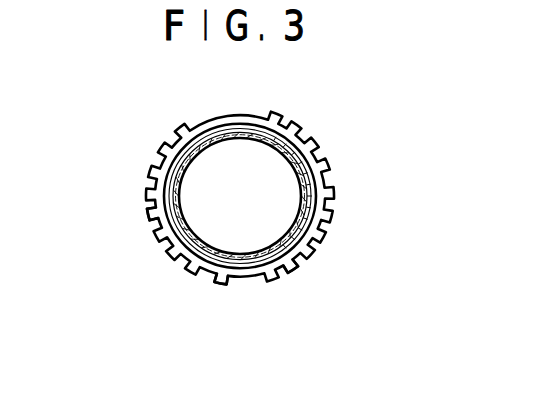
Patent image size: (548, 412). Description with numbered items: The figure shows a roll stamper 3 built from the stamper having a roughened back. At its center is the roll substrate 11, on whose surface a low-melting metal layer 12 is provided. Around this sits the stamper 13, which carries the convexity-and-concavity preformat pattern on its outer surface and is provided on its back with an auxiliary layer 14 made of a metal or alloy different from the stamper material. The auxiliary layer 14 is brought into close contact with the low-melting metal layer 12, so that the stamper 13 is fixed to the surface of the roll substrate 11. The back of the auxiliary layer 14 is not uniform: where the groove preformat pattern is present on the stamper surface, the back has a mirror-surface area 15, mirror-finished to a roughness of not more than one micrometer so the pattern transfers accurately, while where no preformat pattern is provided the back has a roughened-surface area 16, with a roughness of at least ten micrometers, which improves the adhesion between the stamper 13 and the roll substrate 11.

The roll stamper 3 is at (133, 197).
The roll substrate 11 is at (277, 222).
The low-melting metal layer 12 is at (307, 196).
The stamper 13 is at (303, 135).
The auxiliary layer 14 is at (310, 177).
The mirror-surface area 15 is at (292, 268).
The roughened-surface area 16 is at (224, 262).